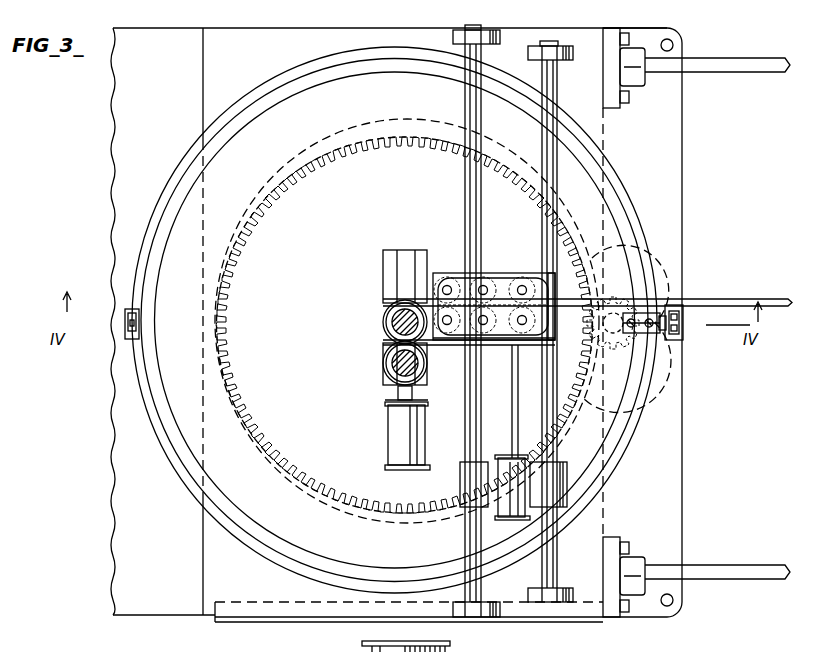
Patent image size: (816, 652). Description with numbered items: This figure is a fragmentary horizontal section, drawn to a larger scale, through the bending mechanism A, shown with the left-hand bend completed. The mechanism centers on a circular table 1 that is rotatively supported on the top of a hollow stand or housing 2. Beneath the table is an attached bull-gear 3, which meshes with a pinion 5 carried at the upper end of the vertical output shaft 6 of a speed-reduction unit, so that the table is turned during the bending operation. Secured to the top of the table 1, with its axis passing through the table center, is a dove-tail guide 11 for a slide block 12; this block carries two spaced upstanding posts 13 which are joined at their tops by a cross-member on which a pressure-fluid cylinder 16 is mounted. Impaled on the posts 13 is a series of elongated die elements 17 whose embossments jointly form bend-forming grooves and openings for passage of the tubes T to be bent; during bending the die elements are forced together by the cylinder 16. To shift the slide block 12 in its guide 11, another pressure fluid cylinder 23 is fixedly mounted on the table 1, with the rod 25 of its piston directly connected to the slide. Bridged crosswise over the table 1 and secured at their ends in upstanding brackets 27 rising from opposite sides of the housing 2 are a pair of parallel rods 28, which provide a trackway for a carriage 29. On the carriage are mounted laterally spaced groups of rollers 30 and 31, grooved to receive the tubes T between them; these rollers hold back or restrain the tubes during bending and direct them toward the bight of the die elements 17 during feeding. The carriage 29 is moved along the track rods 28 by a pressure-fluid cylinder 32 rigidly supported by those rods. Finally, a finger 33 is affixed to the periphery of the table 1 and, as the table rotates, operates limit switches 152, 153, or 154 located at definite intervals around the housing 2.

The circular table 1 is at (196, 442).
The hollow stand or housing 2 is at (203, 537).
The bull-gear 3 is at (262, 468).
The pinion 5 is at (619, 290).
The vertical output shaft 6 is at (613, 368).
The dove-tail guide 11 is at (383, 262).
The slide block 12 is at (384, 304).
The upstanding posts 13 is at (392, 322).
The die elements 17 is at (390, 345).
The pressure fluid cylinder 23 is at (397, 434).
The piston rod 25 is at (398, 395).
The upstanding brackets 27 is at (486, 38).
The parallel rods 28 is at (463, 186).
The carriage 29 is at (548, 272).
The rollers 30 is at (525, 283).
The rollers 31 is at (483, 341).
The pressure-fluid cylinder 32 is at (505, 457).
The finger 33 is at (650, 334).
The limit switch 152 is at (683, 333).
The limit switch 153 is at (685, 318).
The limit switch 154 is at (139, 325).
The pressure-fluid cylinder 16 is at (391, 645).
The bending mechanism A is at (88, 585).
The tubes T is at (726, 298).